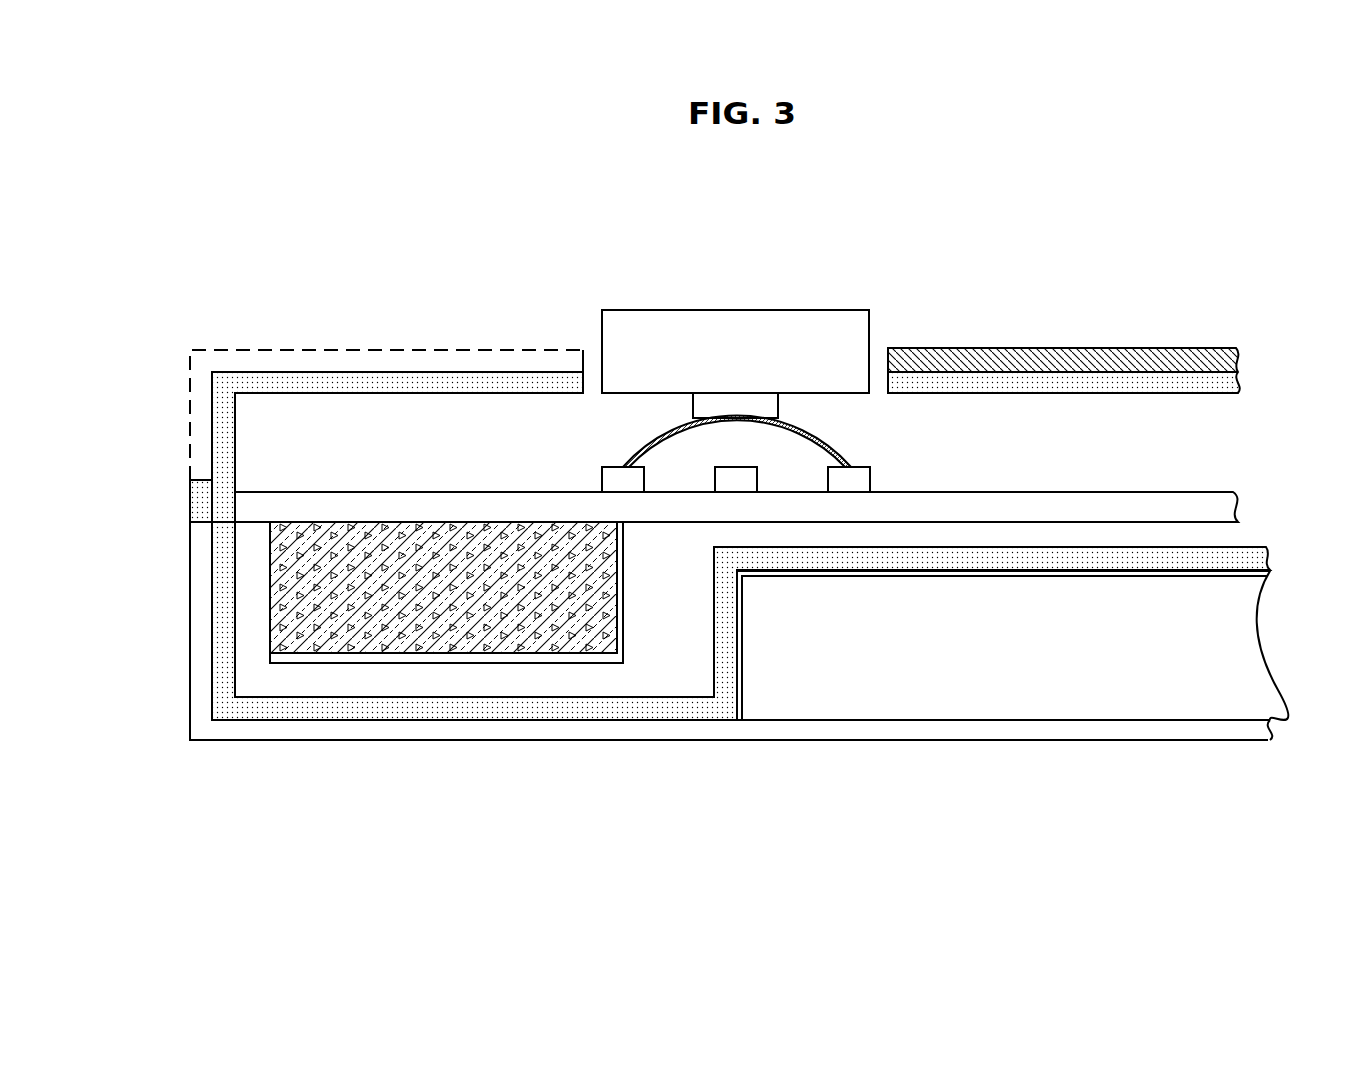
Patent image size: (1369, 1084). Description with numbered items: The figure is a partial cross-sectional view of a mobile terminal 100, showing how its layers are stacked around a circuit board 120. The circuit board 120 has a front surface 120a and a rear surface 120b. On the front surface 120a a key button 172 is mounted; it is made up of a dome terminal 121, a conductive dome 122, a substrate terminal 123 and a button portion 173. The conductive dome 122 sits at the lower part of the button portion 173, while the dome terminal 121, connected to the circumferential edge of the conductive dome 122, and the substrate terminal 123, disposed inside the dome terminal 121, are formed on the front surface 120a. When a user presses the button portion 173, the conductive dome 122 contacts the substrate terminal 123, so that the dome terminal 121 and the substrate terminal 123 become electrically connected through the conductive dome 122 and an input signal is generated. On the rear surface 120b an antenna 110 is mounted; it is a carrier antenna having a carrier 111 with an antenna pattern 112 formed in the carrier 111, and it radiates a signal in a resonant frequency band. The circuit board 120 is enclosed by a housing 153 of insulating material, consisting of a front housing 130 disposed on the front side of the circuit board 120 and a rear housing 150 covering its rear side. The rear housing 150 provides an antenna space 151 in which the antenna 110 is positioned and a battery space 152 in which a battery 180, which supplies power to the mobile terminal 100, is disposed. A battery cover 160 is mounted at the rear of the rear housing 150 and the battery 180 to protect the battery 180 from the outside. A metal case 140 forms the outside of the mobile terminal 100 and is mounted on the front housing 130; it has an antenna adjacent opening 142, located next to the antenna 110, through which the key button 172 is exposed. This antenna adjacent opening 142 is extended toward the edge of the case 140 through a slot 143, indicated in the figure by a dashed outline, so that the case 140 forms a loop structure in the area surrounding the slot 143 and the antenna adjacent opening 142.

The mobile terminal 100 is at (1258, 255).
The antenna 110 is at (112, 602).
The carrier 111 is at (270, 585).
The antenna pattern 112 is at (297, 667).
The circuit board 120 is at (1207, 510).
The front surface of the circuit board 120a is at (1127, 490).
The rear surface of the circuit board 120b is at (678, 527).
The dome terminal 121 is at (630, 482).
The conductive dome 122 is at (688, 418).
The substrate terminal 123 is at (732, 482).
The front housing 130 is at (223, 435).
The case 140 is at (1020, 362).
The antenna adjacent opening 142 is at (597, 368).
The slot 143 is at (299, 362).
The rear housing 150 is at (223, 543).
The antenna space 151 is at (638, 672).
The battery space 152 is at (739, 657).
The housing 153 is at (102, 545).
The battery cover 160 is at (913, 728).
The key button 172 is at (885, 237).
The button portion 173 is at (833, 345).
The battery 180 is at (1232, 653).